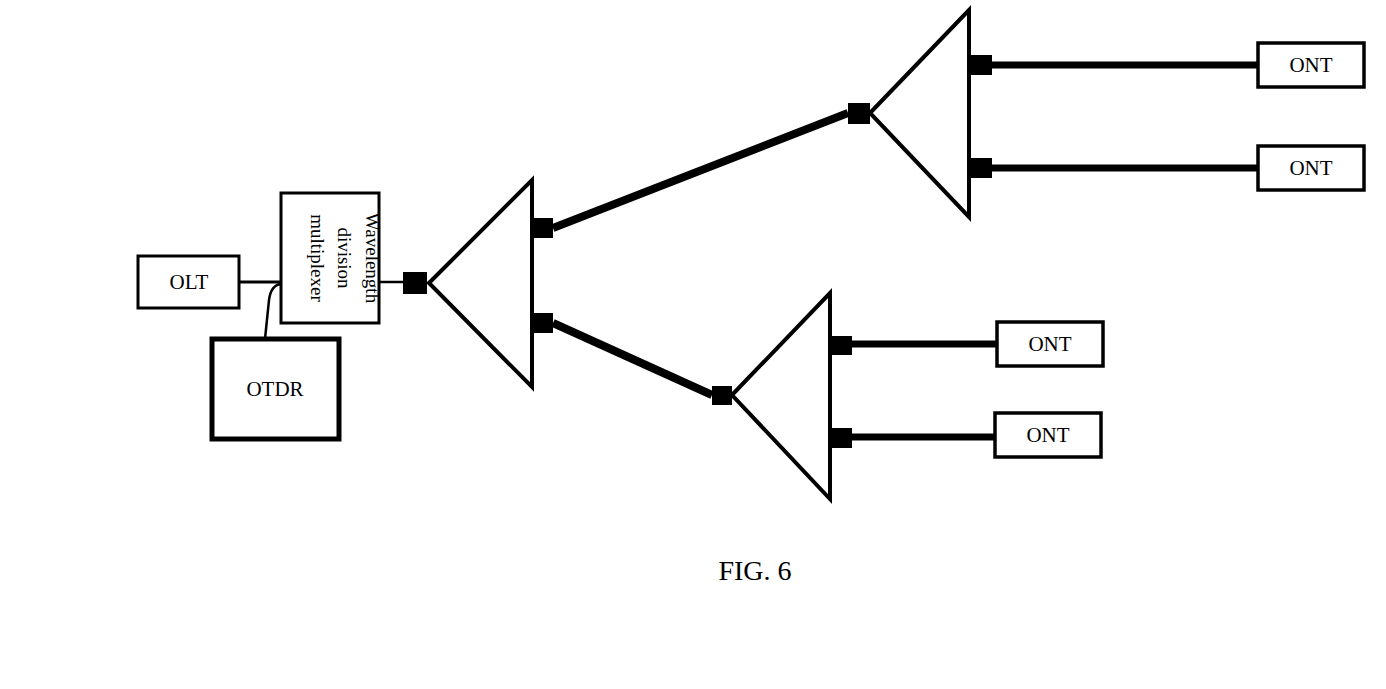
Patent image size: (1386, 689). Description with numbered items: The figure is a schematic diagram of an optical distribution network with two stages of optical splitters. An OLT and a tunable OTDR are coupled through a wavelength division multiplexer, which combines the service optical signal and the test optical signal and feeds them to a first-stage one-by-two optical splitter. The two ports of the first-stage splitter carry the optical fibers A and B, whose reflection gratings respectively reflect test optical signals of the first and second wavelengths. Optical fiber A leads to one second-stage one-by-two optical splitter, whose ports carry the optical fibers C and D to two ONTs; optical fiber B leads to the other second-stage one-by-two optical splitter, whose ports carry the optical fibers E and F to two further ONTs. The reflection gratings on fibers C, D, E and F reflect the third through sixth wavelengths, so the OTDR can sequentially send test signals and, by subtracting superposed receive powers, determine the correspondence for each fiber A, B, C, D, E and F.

The optical fiber A is at (700, 170).
The optical fiber B is at (632, 352).
The optical fiber C is at (1125, 40).
The optical fiber D is at (1125, 145).
The optical fiber E is at (924, 321).
The optical fiber F is at (923, 416).